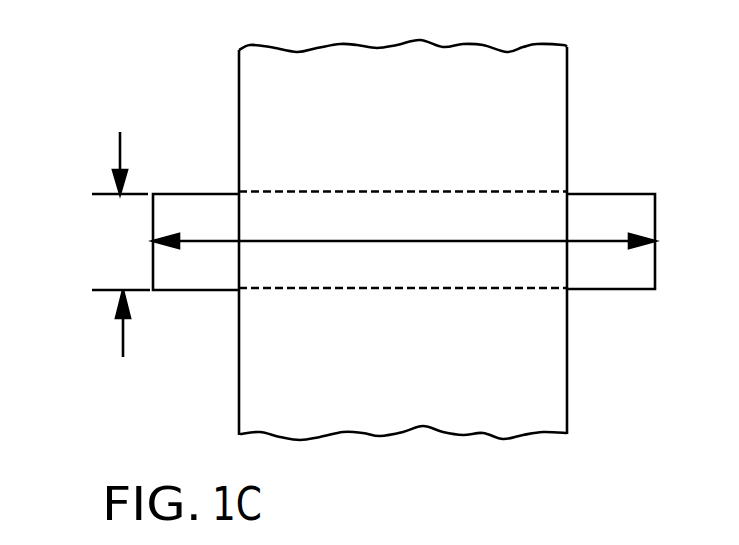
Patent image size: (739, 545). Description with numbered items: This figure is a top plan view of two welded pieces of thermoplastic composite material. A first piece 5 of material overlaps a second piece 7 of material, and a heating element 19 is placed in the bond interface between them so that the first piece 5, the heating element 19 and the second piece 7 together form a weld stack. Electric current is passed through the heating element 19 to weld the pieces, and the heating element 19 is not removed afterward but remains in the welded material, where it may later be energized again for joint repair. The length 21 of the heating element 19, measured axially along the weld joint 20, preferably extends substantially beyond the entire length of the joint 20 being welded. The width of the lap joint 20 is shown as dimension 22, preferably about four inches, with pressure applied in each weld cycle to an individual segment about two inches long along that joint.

The first piece of material 5 is at (537, 140).
The second piece of material 7 is at (547, 397).
The heating element 19 is at (350, 222).
The weld joint 20 is at (567, 289).
The length of the heating element 21 is at (388, 241).
The dimension 22 is at (118, 250).